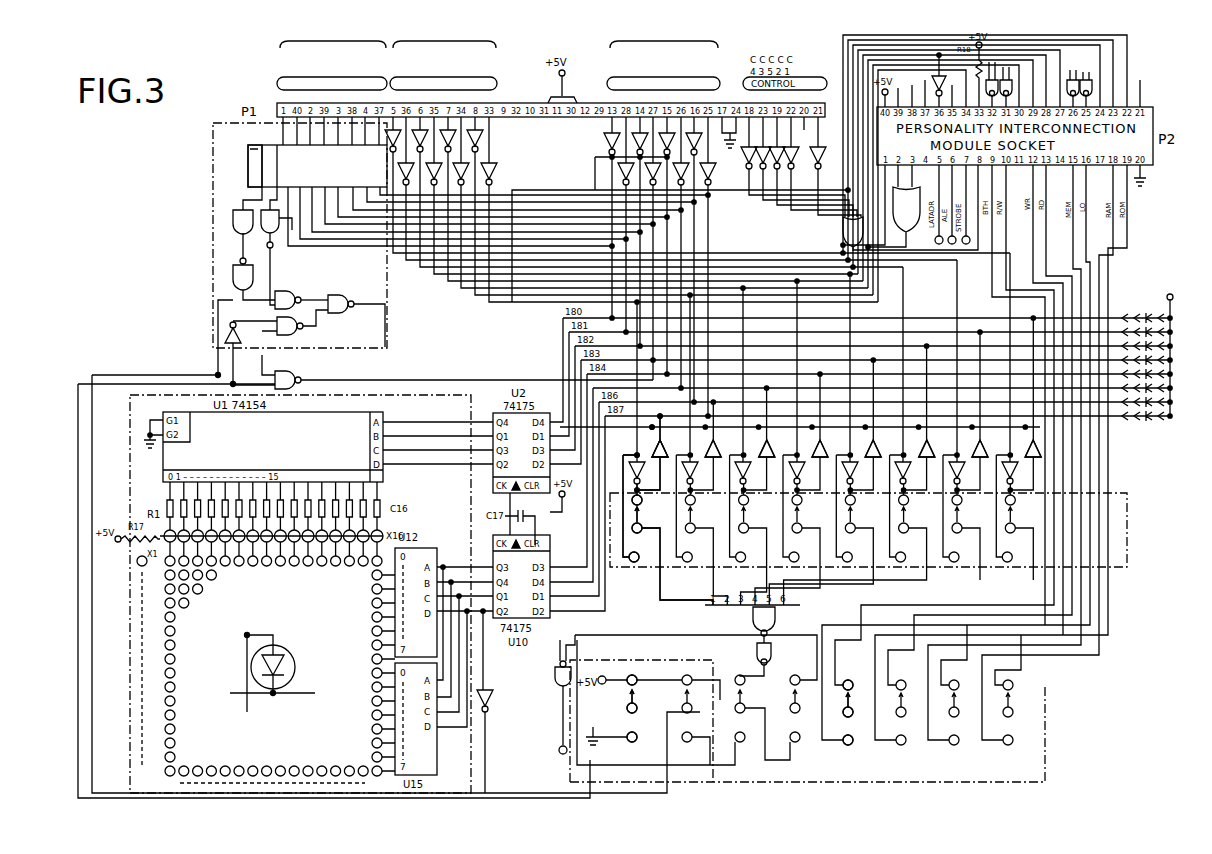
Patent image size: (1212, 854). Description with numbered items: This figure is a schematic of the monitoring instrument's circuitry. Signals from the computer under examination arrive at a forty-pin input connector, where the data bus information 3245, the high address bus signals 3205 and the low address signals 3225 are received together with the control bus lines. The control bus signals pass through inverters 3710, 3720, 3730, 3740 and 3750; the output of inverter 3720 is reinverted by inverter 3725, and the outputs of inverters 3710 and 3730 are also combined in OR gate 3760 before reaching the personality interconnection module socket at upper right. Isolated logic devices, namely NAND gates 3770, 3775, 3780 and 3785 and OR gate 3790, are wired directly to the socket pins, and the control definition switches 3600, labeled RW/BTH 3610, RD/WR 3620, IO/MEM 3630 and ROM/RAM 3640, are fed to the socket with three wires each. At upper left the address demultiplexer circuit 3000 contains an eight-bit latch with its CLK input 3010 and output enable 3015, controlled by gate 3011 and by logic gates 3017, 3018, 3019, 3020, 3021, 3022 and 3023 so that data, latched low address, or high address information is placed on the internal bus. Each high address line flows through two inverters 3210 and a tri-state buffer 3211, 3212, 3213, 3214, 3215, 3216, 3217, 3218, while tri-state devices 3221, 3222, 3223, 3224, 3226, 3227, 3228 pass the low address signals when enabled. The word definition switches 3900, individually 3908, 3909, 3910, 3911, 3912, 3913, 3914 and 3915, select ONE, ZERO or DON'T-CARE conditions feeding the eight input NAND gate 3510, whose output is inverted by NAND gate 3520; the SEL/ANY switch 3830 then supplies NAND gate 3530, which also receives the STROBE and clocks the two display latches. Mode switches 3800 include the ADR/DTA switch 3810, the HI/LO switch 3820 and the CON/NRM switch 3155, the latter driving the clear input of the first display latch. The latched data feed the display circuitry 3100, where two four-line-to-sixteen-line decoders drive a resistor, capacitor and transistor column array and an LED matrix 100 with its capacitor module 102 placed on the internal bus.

The data bus information 3245 is at (281, 42).
The high address bus signals 3205 is at (488, 42).
The low address signals 3225 is at (614, 42).
The CLK input 3010 is at (262, 145).
The output enable input 3015 is at (248, 155).
The logic gate 3019 is at (233, 225).
The address demultiplexer circuit 3000 is at (213, 251).
The gate 3011 is at (274, 246).
The logic gate 3018 is at (233, 283).
The logic gate 3020 is at (281, 291).
The logic gate 3022 is at (333, 295).
The logic gate 3021 is at (299, 333).
The logic gate 3017 is at (225, 338).
The logic gate 3023 is at (287, 371).
The display circuitry 3100 is at (136, 391).
The probe pad array 100 is at (150, 645).
The resistor pack U20 102 is at (868, 357).
The inverters 3210 is at (482, 136).
The tri-state device 3221 is at (603, 139).
The tri-state device 3222 is at (626, 224).
The tri-state device 3223 is at (640, 231).
The tri-state device 3224 is at (653, 248).
The tri-state device 3226 is at (681, 252).
The tri-state device 3227 is at (694, 259).
The tri-state device 3228 is at (628, 266).
The inverter 3710 is at (770, 170).
The inverter 3720 is at (802, 167).
The inverter 3730 is at (811, 167).
The inverter 3740 is at (787, 178).
The inverter 3750 is at (835, 167).
The OR gate 3760 is at (841, 246).
The inverter 3725 is at (939, 76).
The NAND gate 3770 is at (999, 84).
The NAND gate 3775 is at (1006, 87).
The NAND gate 3780 is at (1090, 88).
The NAND gate 3785 is at (1086, 89).
The OR gate 3790 is at (893, 207).
The tri-state buffer 3211 is at (1040, 450).
The tri-state buffer 3212 is at (713, 448).
The tri-state buffer 3213 is at (767, 448).
The tri-state buffer 3214 is at (820, 448).
The tri-state buffer 3215 is at (873, 448).
The tri-state buffer 3216 is at (927, 448).
The tri-state buffer 3217 is at (980, 448).
The tri-state buffer 3218 is at (1033, 448).
The word definition switches 3900 is at (1127, 551).
The word definition switch 3908 is at (1016, 562).
The word definition switch 3909 is at (960, 455).
The word definition switch 3910 is at (859, 474).
The word definition switch 3911 is at (825, 481).
The word definition switch 3912 is at (792, 488).
The word definition switch 3913 is at (746, 495).
The word definition switch 3914 is at (695, 502).
The word definition switch 3915 is at (662, 509).
The eight input NAND gate 3510 is at (750, 615).
The NAND gate 3520 is at (755, 652).
The NAND gate 3530 is at (555, 672).
The switches 3800 is at (699, 786).
The ADR/DTA switch 3810 is at (622, 712).
The HI/LO switch 3820 is at (676, 712).
The SEL/ANY switch 3830 is at (731, 712).
The CON/NRM switch 3155 is at (787, 712).
The control definition switches 3600 is at (1048, 710).
The RW/BTH switch 3610 is at (847, 715).
The RD/WR switch 3620 is at (899, 715).
The IO/MEM switch 3630 is at (952, 715).
The ROM/RAM switch 3640 is at (1005, 715).